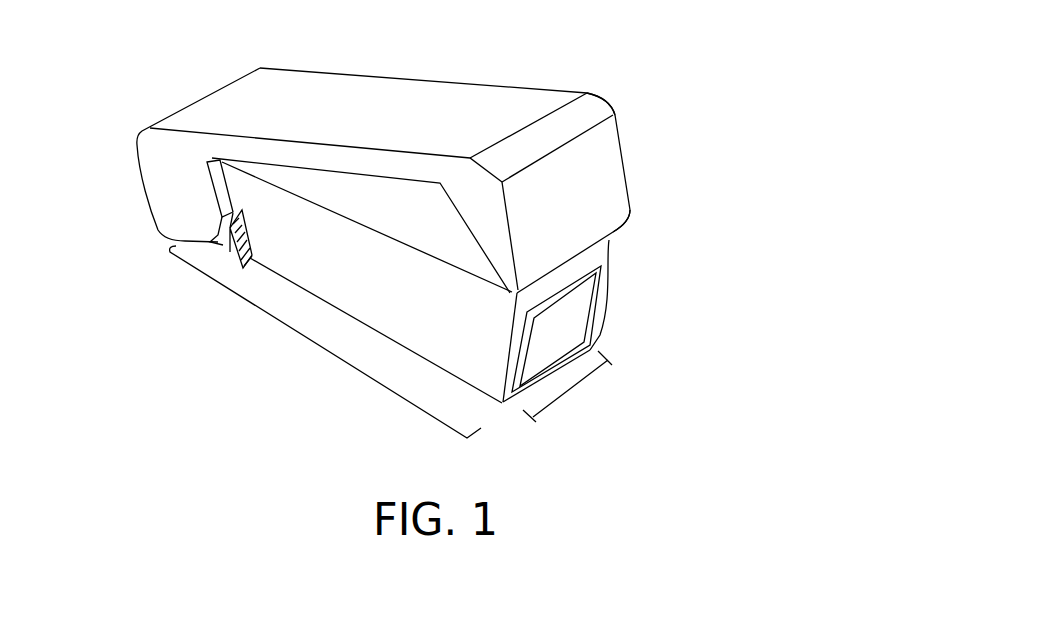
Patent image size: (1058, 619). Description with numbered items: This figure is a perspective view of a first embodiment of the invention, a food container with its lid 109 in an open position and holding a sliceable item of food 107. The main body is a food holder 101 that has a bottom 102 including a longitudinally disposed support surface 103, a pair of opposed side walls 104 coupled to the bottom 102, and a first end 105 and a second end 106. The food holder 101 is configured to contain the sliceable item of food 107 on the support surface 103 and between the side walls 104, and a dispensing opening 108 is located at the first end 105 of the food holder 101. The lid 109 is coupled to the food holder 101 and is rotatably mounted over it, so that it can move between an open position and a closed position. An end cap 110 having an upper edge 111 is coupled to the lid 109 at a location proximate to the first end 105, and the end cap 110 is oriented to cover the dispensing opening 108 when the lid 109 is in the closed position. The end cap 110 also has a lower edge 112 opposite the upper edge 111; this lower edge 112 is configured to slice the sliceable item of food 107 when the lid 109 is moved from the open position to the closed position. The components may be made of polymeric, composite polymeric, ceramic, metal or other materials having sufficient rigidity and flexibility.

The food holder 101 is at (308, 345).
The bottom 102 is at (417, 358).
The support surface 103 is at (552, 373).
The side walls 104 is at (330, 256).
The first end 105 is at (635, 270).
The second end 106 is at (122, 148).
The sliceable item of food 107 is at (563, 318).
The dispensing opening 108 is at (570, 393).
The lid 109 is at (405, 100).
The end cap 110 is at (636, 98).
The upper edge 111 is at (613, 110).
The lower edge 112 is at (603, 236).